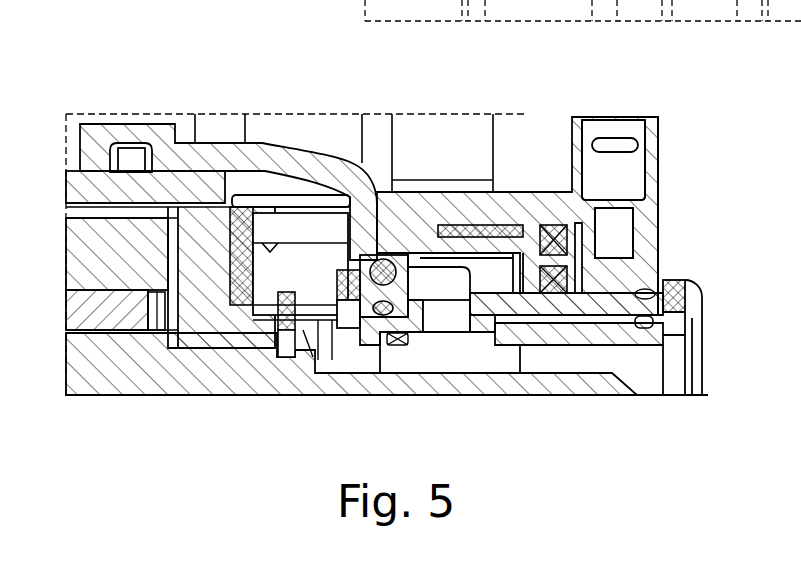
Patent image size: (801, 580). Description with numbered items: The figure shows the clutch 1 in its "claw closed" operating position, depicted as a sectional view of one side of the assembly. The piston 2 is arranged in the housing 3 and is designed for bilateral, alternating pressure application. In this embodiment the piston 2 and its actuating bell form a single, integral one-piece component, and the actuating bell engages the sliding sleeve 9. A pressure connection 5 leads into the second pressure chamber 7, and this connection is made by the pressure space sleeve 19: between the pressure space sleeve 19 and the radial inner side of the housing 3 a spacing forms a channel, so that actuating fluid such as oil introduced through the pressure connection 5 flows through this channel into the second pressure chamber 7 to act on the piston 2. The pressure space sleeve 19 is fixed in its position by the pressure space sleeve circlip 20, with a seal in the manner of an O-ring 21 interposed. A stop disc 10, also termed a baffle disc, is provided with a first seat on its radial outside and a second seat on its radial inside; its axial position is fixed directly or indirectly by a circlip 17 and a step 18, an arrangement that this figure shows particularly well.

The clutch 1 is at (213, 76).
The piston 2 is at (395, 230).
The housing 3 is at (485, 302).
The pressure connection 5 is at (620, 225).
The second pressure chamber 7 is at (500, 258).
The sliding sleeve 9 is at (138, 188).
The stop disc 10 is at (370, 305).
The circlip 17 is at (350, 315).
The step 18 is at (418, 307).
The pressure space sleeve 19 is at (513, 338).
The pressure space sleeve circlip 20 is at (680, 310).
The O-ring 21 is at (646, 328).